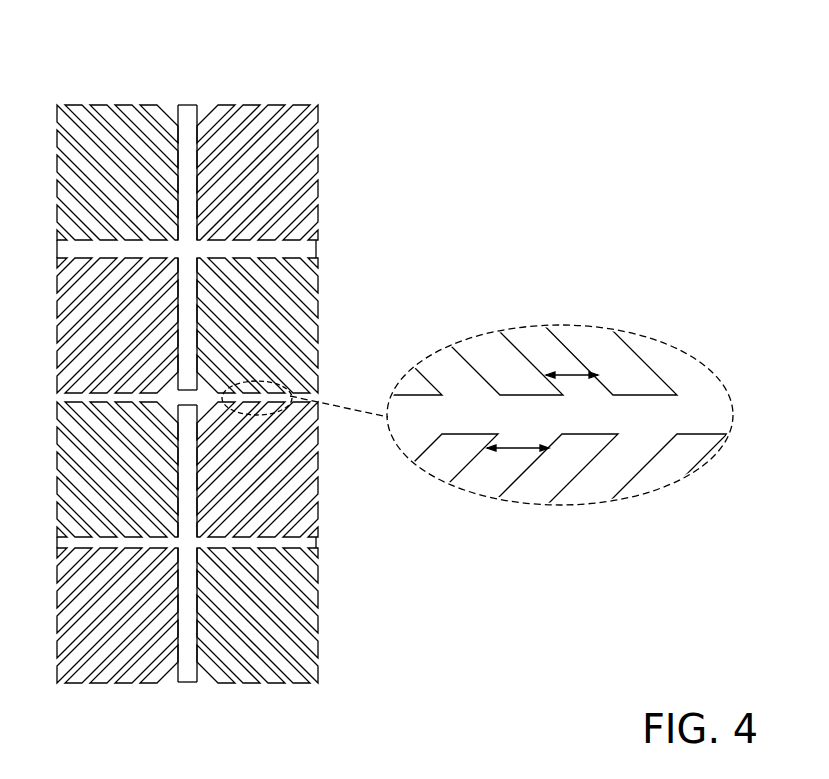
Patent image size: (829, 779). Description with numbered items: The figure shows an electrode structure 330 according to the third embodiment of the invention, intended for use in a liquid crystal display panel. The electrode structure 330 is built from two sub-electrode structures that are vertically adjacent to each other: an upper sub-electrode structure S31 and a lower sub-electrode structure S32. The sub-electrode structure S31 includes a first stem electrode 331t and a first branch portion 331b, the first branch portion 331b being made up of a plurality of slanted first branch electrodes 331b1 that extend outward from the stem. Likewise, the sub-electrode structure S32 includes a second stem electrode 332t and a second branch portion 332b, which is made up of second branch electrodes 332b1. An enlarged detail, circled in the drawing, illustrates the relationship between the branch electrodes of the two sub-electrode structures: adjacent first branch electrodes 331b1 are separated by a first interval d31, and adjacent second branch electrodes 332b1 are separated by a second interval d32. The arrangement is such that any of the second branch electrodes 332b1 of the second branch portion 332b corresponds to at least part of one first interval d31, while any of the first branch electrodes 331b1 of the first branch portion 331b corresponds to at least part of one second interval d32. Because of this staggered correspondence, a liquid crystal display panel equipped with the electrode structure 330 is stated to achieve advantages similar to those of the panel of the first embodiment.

The electrode structure 330 is at (663, 90).
The first branch portion 331b is at (367, 250).
The first branch electrodes 331b1 is at (315, 138).
The first stem electrode 331t is at (315, 247).
The second branch portion 332b is at (392, 542).
The second branch electrodes 332b1 is at (315, 590).
The second stem electrode 332t is at (315, 540).
The sub-electrode structure S31 is at (207, 92).
The sub-electrode structure S32 is at (184, 695).
The first interval d31 is at (574, 393).
The second interval d32 is at (520, 428).